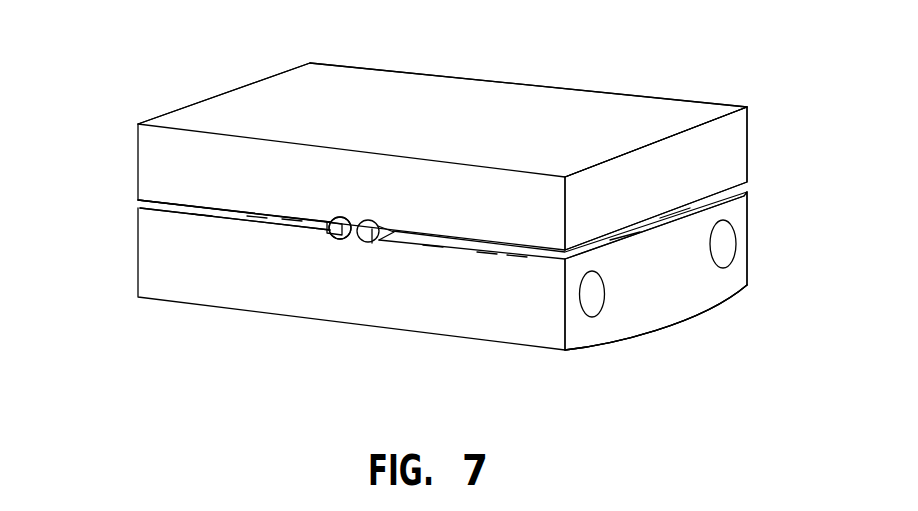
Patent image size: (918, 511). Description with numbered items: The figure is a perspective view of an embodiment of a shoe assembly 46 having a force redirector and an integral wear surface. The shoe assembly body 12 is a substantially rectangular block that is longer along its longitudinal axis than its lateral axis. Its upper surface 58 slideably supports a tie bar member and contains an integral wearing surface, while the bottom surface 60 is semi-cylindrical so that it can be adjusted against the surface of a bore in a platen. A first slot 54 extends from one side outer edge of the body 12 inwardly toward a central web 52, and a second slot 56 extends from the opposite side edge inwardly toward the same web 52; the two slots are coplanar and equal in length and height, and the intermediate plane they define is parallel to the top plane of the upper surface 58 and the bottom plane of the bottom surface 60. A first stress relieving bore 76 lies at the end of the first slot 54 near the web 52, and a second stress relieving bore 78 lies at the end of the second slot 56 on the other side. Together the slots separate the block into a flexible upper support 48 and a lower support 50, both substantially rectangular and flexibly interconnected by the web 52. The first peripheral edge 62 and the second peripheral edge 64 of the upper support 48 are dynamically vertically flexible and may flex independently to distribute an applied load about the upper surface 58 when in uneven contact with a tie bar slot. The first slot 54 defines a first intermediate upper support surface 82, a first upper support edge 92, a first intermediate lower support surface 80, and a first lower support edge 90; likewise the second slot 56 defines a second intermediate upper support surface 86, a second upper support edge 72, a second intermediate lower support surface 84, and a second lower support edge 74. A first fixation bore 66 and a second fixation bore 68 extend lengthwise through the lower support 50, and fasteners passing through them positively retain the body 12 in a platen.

The shoe assembly body 12 is at (138, 297).
The shoe assembly embodiment 46 is at (440, 50).
The flexible upper support 48 is at (737, 153).
The lower support 50 is at (738, 210).
The central web 52 is at (350, 243).
The first slot 54 is at (257, 217).
The second slot 56 is at (487, 247).
The upper surface 58 is at (523, 115).
The bottom surface 60 is at (693, 322).
The first peripheral edge 62 is at (228, 92).
The second peripheral edge 64 is at (687, 130).
The first fixation bore 66 is at (590, 293).
The second fixation bore 68 is at (727, 245).
The second upper support edge 72 is at (673, 213).
The second lower support edge 74 is at (623, 240).
The first stress relieving bore 76 is at (340, 243).
The second stress relieving bore 78 is at (372, 243).
The first intermediate lower support surface 80 is at (202, 220).
The first intermediate upper support surface 82 is at (292, 220).
The second intermediate lower support surface 84 is at (433, 247).
The second intermediate upper support surface 86 is at (517, 247).
The first lower support edge 90 is at (140, 208).
The first upper support edge 92 is at (138, 200).